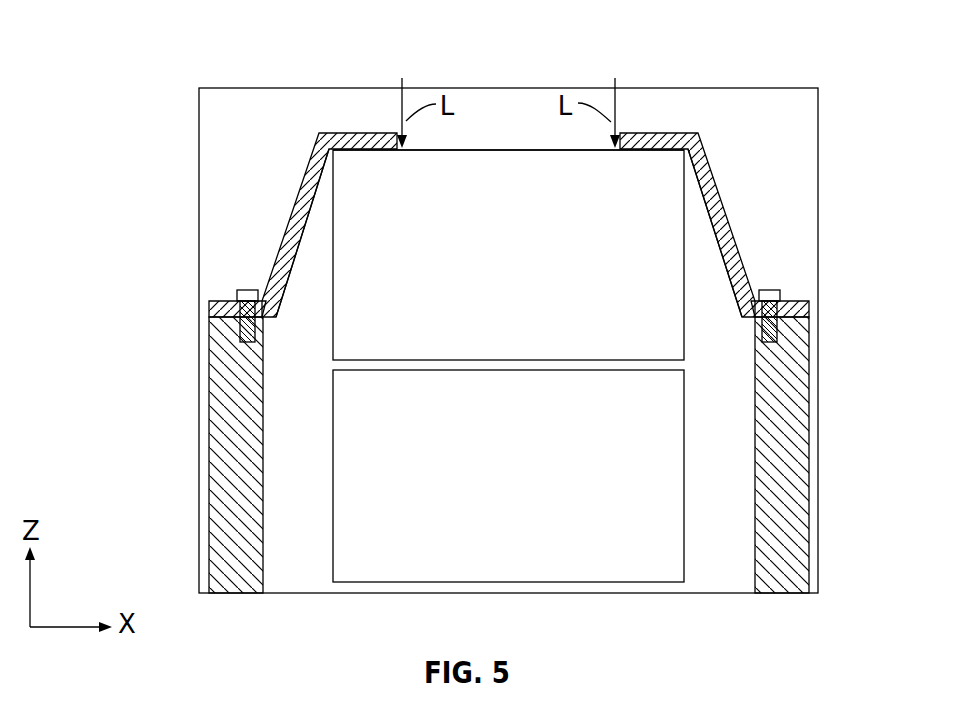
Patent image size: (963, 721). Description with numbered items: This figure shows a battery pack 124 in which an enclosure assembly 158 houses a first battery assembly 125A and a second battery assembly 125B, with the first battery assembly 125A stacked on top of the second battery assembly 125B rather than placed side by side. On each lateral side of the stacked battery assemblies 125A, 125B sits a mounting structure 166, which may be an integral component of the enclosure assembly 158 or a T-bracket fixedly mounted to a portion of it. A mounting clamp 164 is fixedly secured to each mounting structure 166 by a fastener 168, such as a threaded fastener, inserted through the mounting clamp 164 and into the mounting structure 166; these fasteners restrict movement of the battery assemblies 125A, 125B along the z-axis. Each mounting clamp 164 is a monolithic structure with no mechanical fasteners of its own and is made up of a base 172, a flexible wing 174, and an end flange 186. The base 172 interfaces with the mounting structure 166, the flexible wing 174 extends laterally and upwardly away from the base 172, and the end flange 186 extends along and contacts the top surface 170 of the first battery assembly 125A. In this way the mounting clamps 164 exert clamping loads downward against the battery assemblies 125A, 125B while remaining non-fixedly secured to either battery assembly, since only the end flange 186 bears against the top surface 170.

The battery pack 124 is at (167, 33).
The enclosure assembly 158 is at (785, 82).
The first battery assembly 125A is at (508, 255).
The second battery assembly 125B is at (508, 476).
The top surface 170 is at (470, 148).
The mounting structure 166 is at (216, 470).
The base 172 is at (222, 307).
The mounting clamp 164 is at (287, 189).
The flexible wing 174 is at (299, 232).
The fastener 168 is at (248, 289).
The end flange 186 is at (354, 132).